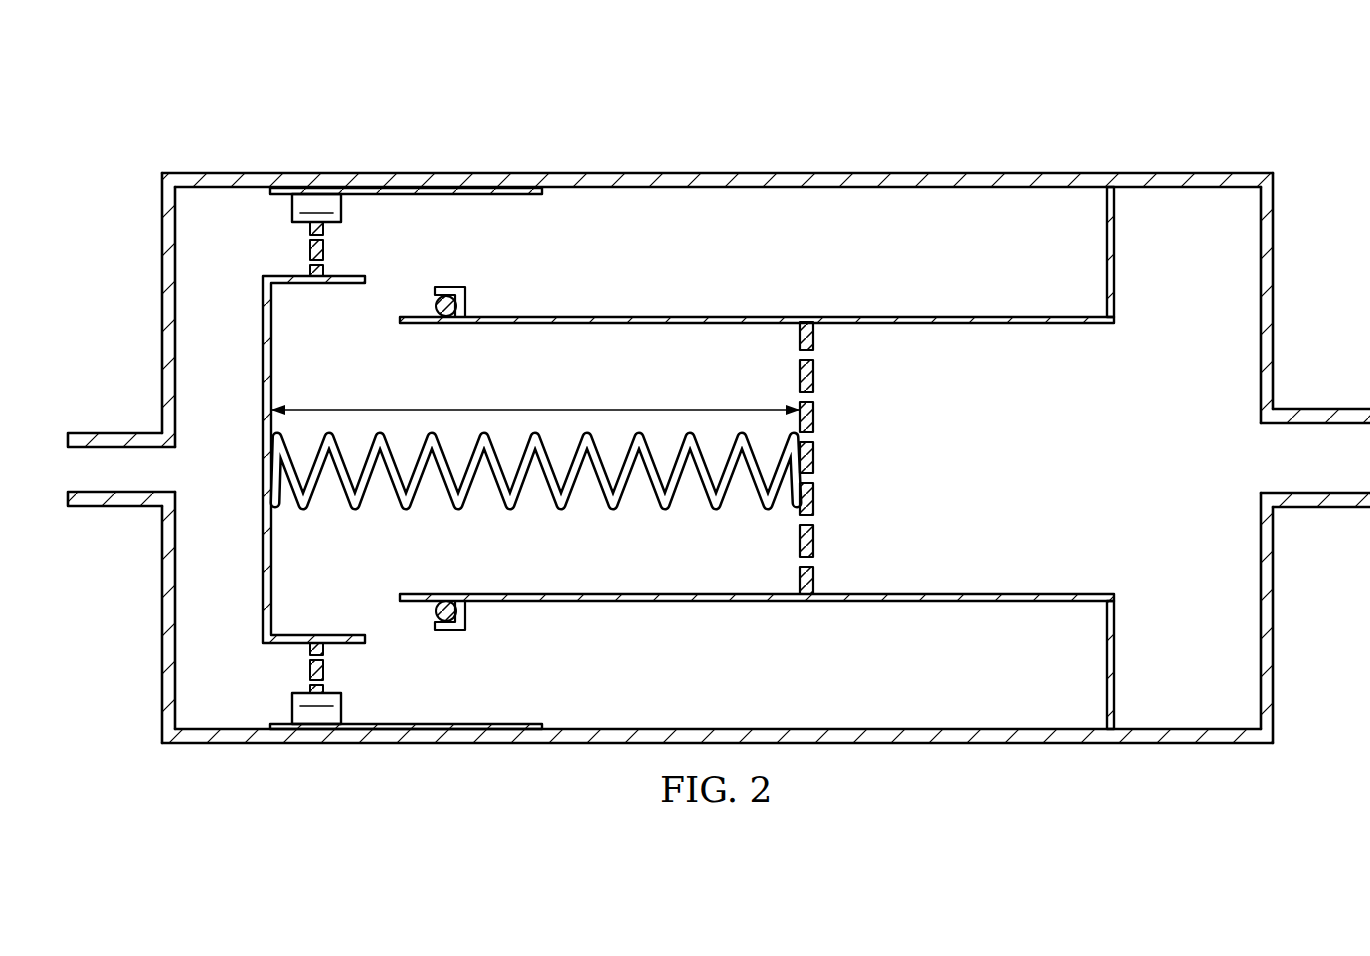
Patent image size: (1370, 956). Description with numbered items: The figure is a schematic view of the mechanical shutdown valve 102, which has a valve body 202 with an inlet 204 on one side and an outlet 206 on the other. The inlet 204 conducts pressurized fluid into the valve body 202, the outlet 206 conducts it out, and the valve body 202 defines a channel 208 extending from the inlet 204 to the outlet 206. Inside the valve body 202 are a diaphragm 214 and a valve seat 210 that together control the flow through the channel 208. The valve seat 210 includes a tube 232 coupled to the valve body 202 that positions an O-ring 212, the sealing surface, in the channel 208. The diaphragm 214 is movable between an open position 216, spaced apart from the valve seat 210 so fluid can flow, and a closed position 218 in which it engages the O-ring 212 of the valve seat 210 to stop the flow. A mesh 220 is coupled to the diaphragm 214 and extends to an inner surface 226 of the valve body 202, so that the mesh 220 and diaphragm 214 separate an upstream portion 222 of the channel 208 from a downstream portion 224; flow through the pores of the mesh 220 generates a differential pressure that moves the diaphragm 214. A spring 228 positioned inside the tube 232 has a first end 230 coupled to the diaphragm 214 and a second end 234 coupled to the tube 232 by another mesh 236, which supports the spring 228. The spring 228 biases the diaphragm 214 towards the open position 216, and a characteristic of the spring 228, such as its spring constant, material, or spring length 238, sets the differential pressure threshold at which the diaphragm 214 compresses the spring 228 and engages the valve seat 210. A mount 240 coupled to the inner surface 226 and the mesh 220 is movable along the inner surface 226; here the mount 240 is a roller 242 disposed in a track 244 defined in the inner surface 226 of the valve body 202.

The mechanical shutdown valve 102 is at (1183, 111).
The valve body 202 is at (785, 182).
The inlet 204 is at (118, 433).
The outlet 206 is at (1312, 409).
The channel 208 is at (367, 426).
The valve seat 210 is at (466, 618).
The O-ring 212 is at (430, 608).
The diaphragm 214 is at (262, 368).
The open position 216 is at (268, 240).
The closed position 218 is at (398, 297).
The mesh 220 is at (308, 665).
The upstream portion 222 is at (178, 572).
The downstream portion 224 is at (1262, 568).
The inner surface 226 is at (903, 190).
The spring 228 is at (588, 506).
The first end 230 is at (300, 505).
The tube 232 is at (765, 603).
The second end 234 is at (770, 506).
The other mesh 236 is at (815, 540).
The spring length 238 is at (532, 408).
The mount 240 is at (361, 214).
The roller 242 is at (320, 208).
The track 244 is at (542, 196).